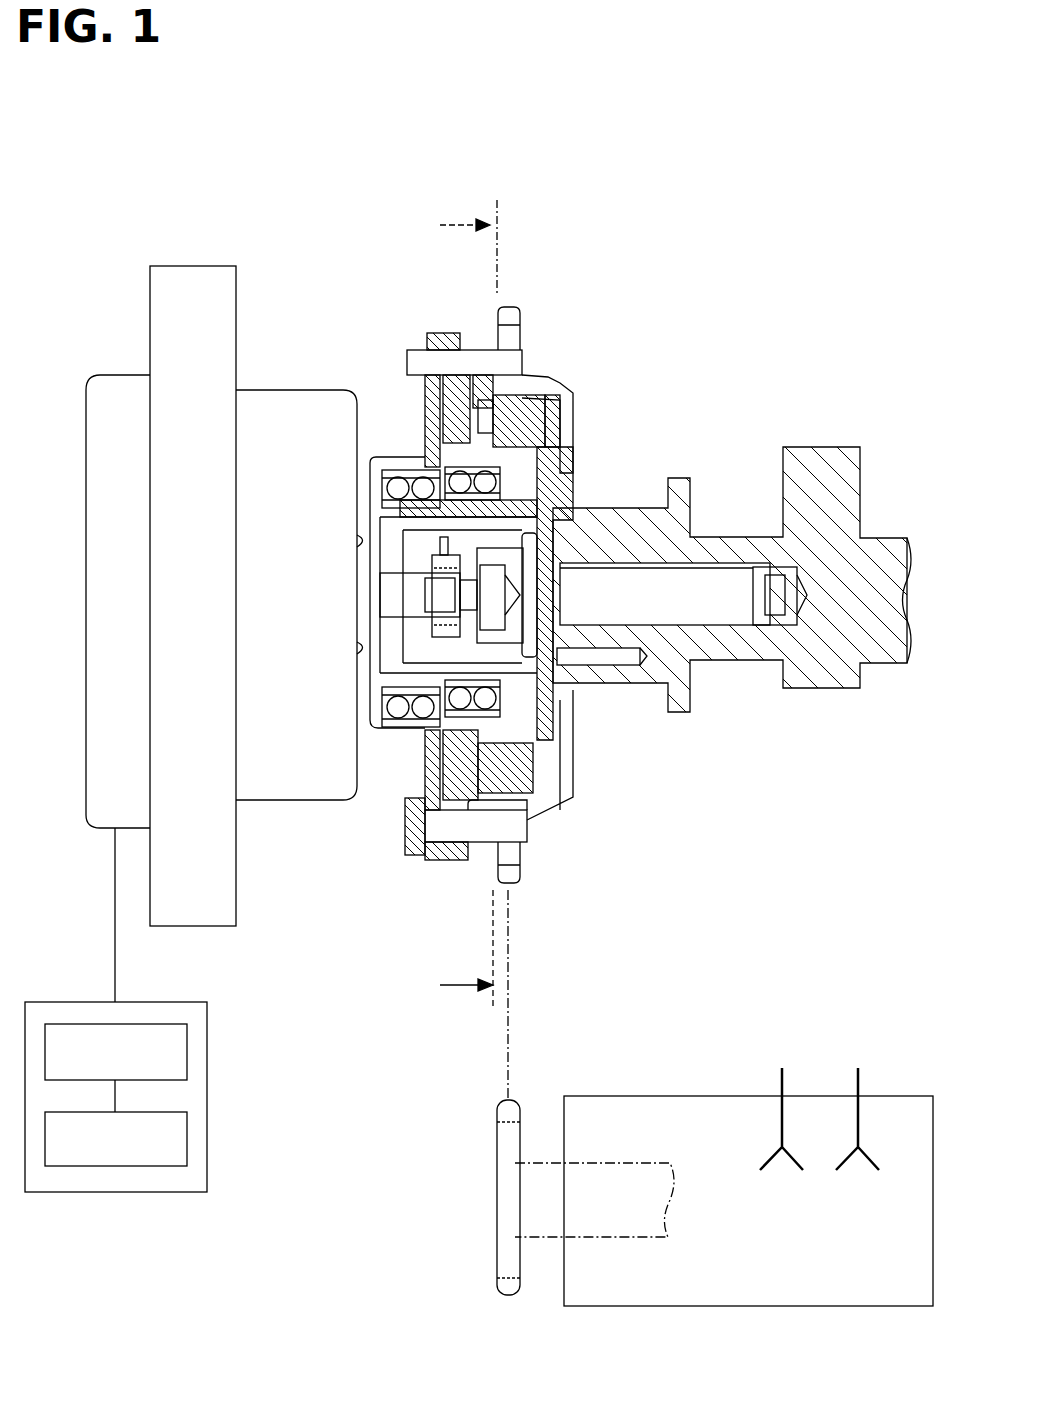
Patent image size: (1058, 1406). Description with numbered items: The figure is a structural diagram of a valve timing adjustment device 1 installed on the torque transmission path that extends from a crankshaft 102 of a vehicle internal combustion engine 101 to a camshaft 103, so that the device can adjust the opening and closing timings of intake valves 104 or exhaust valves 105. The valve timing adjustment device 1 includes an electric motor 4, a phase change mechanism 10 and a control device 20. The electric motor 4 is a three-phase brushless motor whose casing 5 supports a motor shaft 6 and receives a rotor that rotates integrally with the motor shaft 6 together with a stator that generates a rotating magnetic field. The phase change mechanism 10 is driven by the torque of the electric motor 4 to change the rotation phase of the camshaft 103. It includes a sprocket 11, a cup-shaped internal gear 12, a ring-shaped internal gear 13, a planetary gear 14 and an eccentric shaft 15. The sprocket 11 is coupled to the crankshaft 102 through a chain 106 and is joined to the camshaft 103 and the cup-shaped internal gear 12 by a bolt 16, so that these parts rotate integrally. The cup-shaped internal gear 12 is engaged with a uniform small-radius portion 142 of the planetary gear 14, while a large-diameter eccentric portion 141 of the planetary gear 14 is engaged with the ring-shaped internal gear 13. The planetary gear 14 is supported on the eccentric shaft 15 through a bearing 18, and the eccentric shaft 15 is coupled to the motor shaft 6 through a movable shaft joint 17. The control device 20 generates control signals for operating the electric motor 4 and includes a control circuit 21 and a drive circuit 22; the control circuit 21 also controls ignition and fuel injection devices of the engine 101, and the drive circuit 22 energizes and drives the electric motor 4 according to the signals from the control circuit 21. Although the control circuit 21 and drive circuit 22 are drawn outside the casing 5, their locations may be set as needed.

The valve timing adjustment device 1 is at (333, 203).
The electric motor 4 is at (287, 390).
The casing 5 is at (296, 800).
The motor shaft 6 is at (383, 595).
The phase change mechanism 10 is at (440, 333).
The sprocket 11 is at (520, 880).
The cup-shaped internal gear 12 is at (545, 410).
The ring-shaped internal gear 13 is at (480, 845).
The planetary gear 14 is at (550, 745).
The large-diameter eccentric portion 141 is at (435, 436).
The uniform small-radius portion 142 is at (548, 447).
The eccentric shaft 15 is at (545, 495).
The bolt 16 is at (722, 610).
The movable shaft joint 17 is at (425, 635).
The bearing 18 is at (443, 737).
The control device 20 is at (100, 1192).
The control circuit 21 is at (187, 1148).
The drive circuit 22 is at (187, 1042).
The internal combustion engine 101 is at (725, 1096).
The crankshaft 102 is at (628, 1163).
The camshaft 103 is at (820, 680).
The intake valves 104 is at (783, 1170).
The exhaust valves 105 is at (858, 1170).
The chain 106 is at (515, 1018).